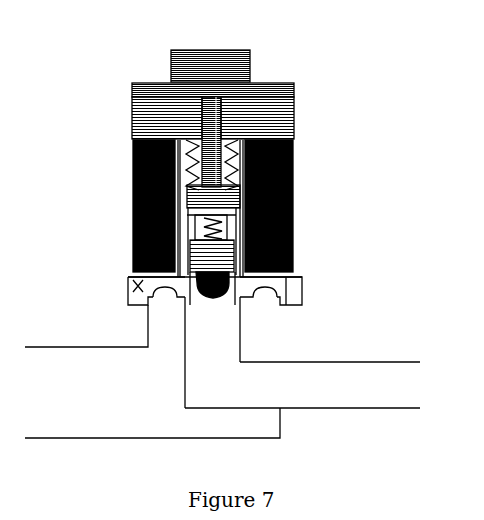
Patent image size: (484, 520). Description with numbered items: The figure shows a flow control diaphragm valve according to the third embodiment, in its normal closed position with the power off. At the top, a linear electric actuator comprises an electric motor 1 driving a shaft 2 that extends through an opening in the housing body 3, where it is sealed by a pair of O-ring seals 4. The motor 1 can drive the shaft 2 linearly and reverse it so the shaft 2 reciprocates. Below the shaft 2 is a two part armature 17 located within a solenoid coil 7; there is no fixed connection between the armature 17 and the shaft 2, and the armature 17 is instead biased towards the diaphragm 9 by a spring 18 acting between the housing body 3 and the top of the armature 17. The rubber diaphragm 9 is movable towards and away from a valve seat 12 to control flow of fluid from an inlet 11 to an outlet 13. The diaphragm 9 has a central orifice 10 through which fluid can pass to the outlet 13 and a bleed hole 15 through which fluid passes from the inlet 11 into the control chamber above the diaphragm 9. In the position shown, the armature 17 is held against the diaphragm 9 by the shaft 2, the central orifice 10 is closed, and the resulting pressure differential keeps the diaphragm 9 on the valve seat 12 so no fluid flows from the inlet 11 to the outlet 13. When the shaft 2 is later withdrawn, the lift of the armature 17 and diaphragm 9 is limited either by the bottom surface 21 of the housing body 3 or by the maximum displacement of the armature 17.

The electric motor 1 is at (240, 49).
The shaft 2 is at (245, 93).
The housing body 3 is at (293, 108).
The O-ring seals 4 is at (225, 127).
The spring 18 is at (242, 160).
The armature 17 is at (256, 208).
The solenoid coil 7 is at (296, 218).
The bottom surface 21 is at (145, 289).
The bleed hole 15 is at (150, 294).
The central orifice 10 is at (205, 300).
The diaphragm 9 is at (258, 305).
The valve seat 12 is at (240, 317).
The inlet 11 is at (82, 390).
The outlet 13 is at (297, 388).